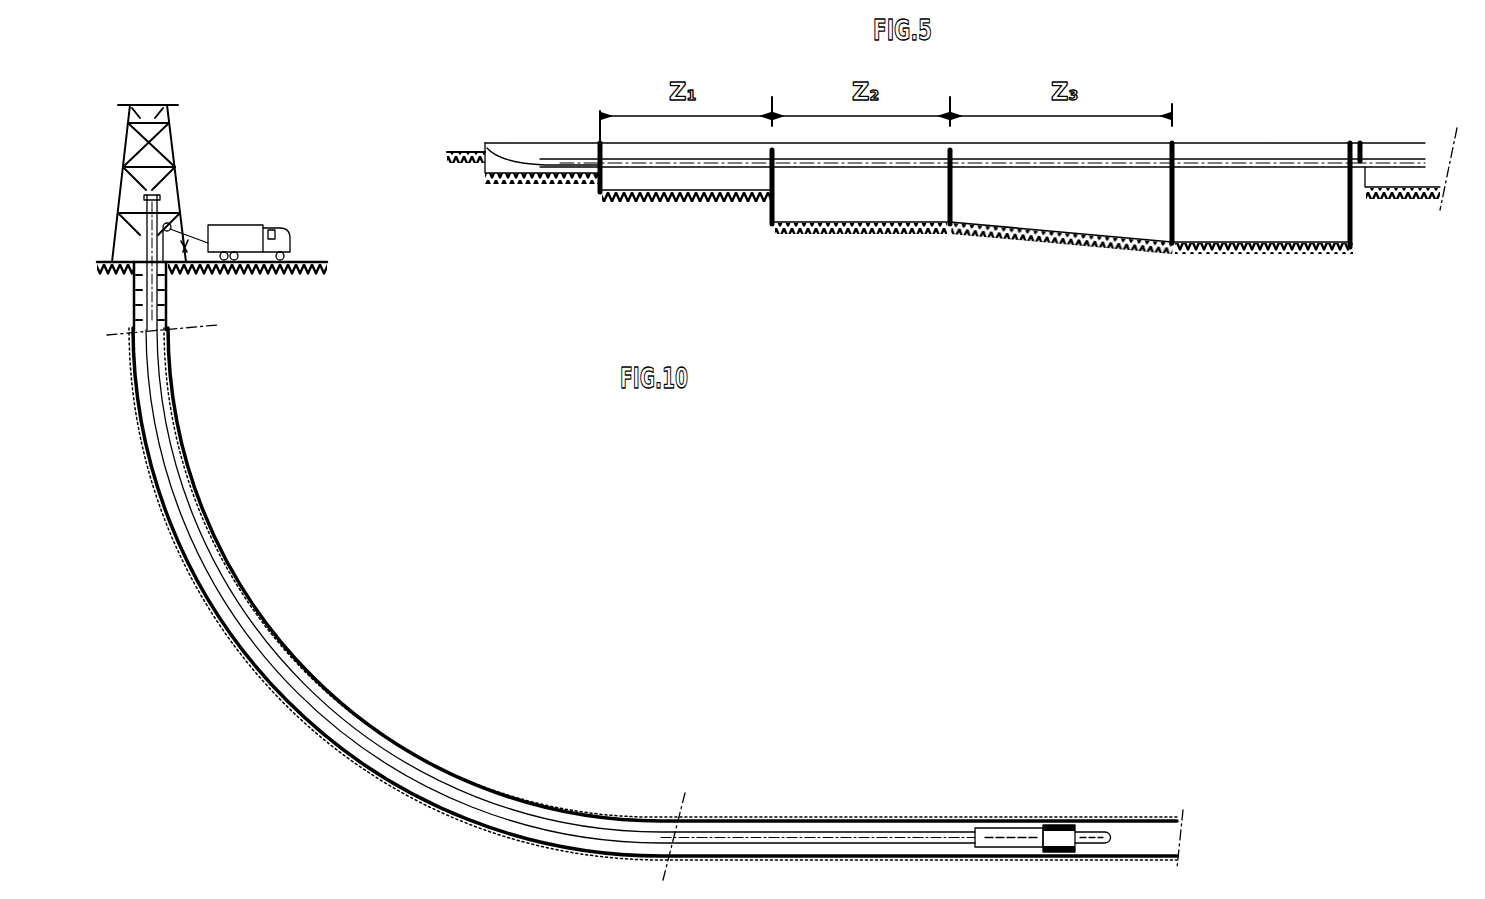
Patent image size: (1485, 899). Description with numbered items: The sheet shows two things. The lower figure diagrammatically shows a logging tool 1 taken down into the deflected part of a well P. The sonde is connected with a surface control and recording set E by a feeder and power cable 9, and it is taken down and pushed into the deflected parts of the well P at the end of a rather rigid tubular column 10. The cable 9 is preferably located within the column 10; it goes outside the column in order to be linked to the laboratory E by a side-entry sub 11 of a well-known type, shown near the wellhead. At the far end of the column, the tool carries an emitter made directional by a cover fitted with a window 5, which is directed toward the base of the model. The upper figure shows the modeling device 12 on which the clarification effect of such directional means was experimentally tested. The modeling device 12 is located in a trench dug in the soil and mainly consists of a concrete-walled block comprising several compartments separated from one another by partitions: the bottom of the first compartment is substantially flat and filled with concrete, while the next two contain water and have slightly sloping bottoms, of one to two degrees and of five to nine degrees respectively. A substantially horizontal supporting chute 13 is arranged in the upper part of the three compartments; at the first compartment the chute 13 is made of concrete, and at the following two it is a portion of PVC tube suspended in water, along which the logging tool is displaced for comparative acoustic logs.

In FIG. 10, the drilling tool assembly 1 is at (1060, 796).
In FIG. 10, the window 5 is at (1060, 825).
In FIG. 10, the feeder and power cable 9 is at (193, 232).
In FIG. 10, the surface control and recording set E is at (250, 226).
In FIG. 10, the side-entry sub 11 is at (160, 300).
In FIG. 10, the well P is at (283, 638).
In FIG. 10, the tubular column 10 is at (392, 743).
In FIG. 5, the modeling device 12 is at (836, 259).
In FIG. 5, the supporting chute 13 is at (707, 168).